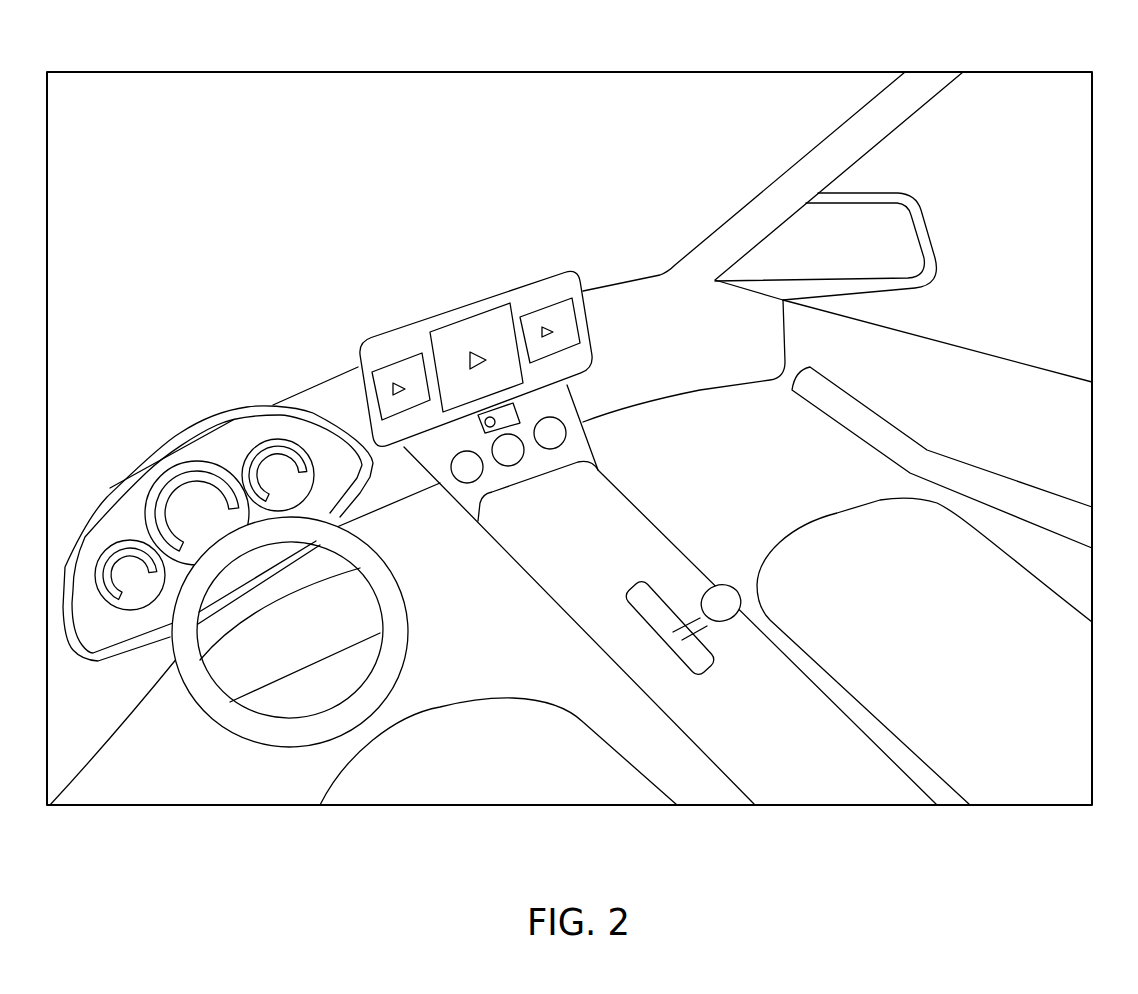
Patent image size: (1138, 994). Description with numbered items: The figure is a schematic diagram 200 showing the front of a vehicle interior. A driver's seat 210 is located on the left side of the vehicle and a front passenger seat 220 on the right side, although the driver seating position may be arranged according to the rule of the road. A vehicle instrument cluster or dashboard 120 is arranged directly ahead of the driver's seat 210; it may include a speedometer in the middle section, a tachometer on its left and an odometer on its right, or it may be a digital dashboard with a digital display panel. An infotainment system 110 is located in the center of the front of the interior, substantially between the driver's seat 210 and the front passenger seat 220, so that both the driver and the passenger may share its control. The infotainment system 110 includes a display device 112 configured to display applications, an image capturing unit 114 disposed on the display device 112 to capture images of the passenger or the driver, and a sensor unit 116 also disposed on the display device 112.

The schematic diagram 200 is at (1045, 56).
The infotainment system 110 is at (488, 448).
The display device 112 is at (398, 447).
The image capturing unit 114 is at (497, 435).
The sensor unit 116 is at (534, 492).
The dashboard 120 is at (200, 412).
The driver's seat 210 is at (473, 700).
The front passenger seat 220 is at (800, 535).